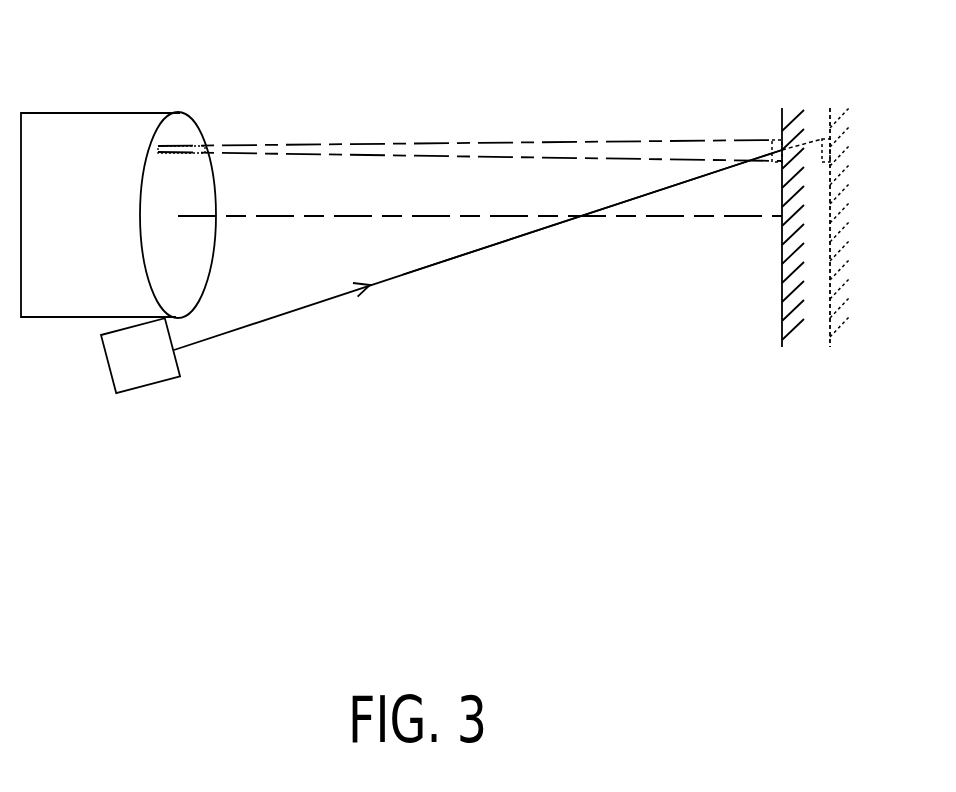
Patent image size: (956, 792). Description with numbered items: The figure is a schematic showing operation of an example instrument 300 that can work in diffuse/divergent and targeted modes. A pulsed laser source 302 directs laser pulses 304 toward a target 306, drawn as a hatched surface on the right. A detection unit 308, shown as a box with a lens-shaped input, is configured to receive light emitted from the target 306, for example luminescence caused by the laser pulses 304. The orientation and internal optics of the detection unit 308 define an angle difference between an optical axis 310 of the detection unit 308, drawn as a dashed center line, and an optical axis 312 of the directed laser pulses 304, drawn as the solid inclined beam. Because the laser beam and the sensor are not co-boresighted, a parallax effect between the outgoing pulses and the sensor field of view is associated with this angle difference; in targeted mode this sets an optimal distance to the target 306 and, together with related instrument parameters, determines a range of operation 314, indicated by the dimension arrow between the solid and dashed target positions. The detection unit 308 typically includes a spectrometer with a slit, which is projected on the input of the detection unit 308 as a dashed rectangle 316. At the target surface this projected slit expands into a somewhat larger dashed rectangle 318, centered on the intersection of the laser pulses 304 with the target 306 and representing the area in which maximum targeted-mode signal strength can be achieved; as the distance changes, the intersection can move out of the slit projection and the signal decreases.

The instrument 300 is at (108, 545).
The pulsed laser source 302 is at (151, 379).
The laser pulses 304 is at (263, 322).
The target 306 is at (783, 262).
The detection unit 308 is at (83, 147).
The optical axis of the detection unit 310 is at (320, 215).
The optical axis of the directed laser pulses 312 is at (403, 275).
The range of operation 314 is at (830, 358).
The dashed rectangle 316 is at (180, 147).
The larger dashed rectangle 318 is at (775, 145).